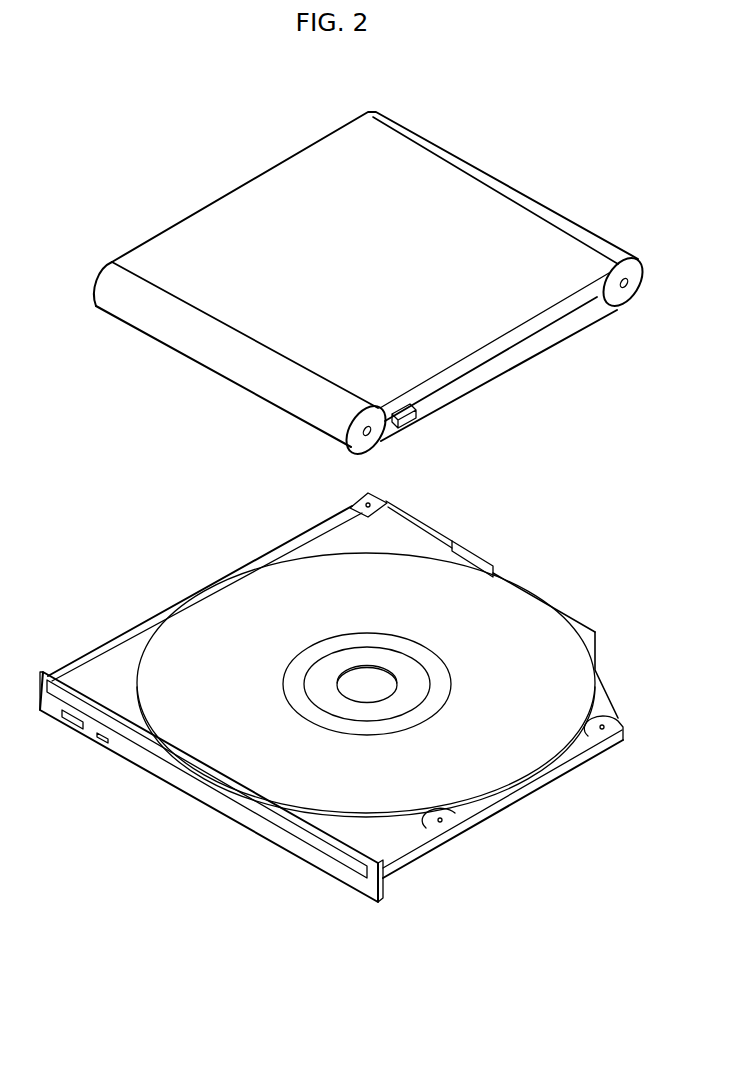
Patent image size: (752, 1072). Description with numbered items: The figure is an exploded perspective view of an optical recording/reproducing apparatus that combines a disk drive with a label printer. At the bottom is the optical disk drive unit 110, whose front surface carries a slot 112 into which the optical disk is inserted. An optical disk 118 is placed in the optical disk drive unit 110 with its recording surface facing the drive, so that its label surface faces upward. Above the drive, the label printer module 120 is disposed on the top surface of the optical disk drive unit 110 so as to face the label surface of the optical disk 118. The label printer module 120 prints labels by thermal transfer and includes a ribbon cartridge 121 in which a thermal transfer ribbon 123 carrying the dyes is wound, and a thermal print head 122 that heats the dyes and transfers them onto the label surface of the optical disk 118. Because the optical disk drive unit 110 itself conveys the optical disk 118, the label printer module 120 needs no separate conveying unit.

The optical disk drive unit 110 is at (242, 818).
The slot 112 is at (186, 768).
The optical disk 118 is at (218, 607).
The label printer module 120 is at (372, 300).
The ribbon cartridge 121 is at (376, 438).
The thermal print head 122 is at (414, 424).
The thermal transfer ribbon 123 is at (508, 363).